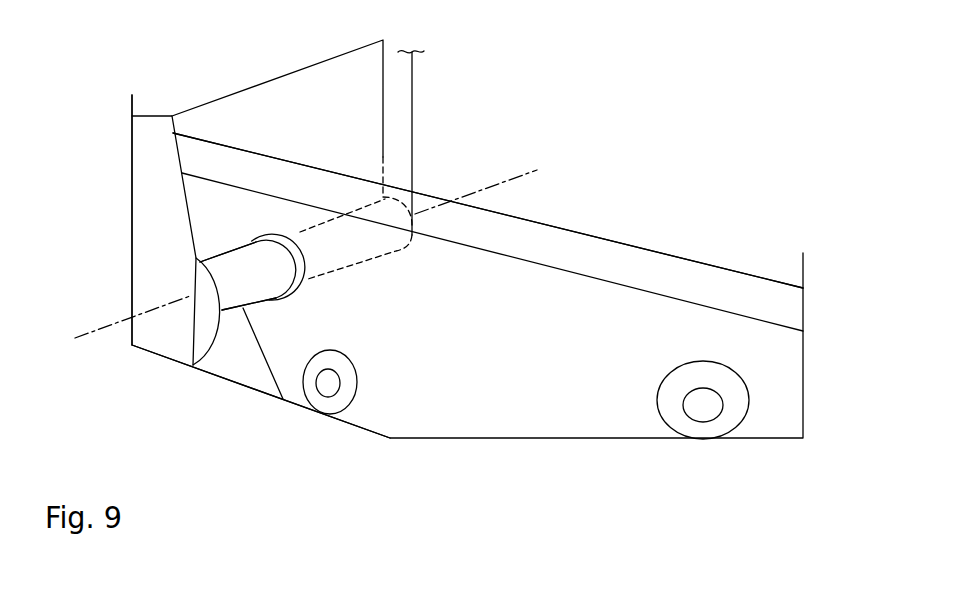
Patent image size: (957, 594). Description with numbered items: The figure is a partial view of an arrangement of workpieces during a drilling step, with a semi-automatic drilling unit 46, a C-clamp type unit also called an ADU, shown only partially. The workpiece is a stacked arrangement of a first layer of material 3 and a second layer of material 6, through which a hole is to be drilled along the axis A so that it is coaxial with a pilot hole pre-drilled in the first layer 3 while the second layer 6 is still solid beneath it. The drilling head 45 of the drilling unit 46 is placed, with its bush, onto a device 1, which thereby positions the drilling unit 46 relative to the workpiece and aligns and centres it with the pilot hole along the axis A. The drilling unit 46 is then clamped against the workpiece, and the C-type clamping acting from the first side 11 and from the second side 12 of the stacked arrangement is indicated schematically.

The device 1 is at (277, 236).
The first layer of material 3 is at (528, 438).
The second layer of material 6 is at (235, 363).
The first side 11 is at (188, 375).
The second side 12 is at (561, 194).
The drilling head 45 is at (214, 248).
The semi-automatic drilling unit 46 is at (146, 193).
The axis A is at (90, 328).